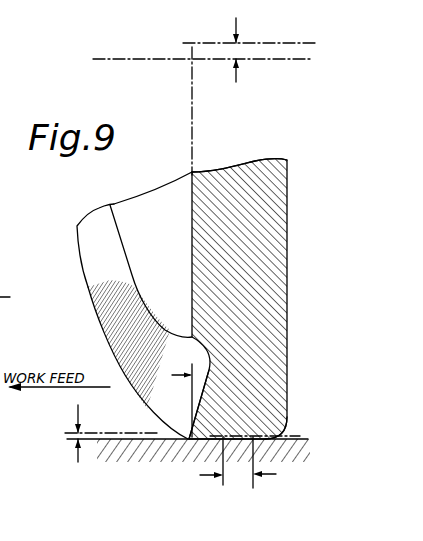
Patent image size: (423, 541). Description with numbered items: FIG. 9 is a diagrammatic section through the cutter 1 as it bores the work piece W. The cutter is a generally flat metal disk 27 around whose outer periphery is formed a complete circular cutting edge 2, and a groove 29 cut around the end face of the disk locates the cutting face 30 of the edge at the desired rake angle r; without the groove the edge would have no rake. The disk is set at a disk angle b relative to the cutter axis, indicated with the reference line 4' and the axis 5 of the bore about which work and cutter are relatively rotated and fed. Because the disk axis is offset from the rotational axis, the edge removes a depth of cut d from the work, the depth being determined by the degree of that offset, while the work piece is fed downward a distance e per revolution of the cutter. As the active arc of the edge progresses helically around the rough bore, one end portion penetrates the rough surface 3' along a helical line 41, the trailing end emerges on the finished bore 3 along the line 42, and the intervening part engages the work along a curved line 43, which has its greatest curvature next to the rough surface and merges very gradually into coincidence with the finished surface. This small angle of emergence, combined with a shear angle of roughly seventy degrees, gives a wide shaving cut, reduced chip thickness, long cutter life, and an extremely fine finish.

The cutter 1 is at (298, 190).
The cutting edge 2 is at (100, 323).
The finished bore 3 is at (112, 417).
The rough surface 3' is at (260, 421).
The reference line 4' is at (203, 111).
The axis of the bore 5 is at (300, 43).
The metal disk 27 is at (230, 178).
The groove 29 is at (127, 262).
The cutting face 30 is at (100, 281).
The helical line 41 is at (258, 438).
The line of emergence 42 is at (188, 438).
The curved line 43 is at (222, 440).
The work piece W is at (158, 452).
The disk angle b is at (232, 51).
The depth of cut d is at (71, 433).
The feed distance e is at (238, 462).
The rake angle r is at (197, 373).